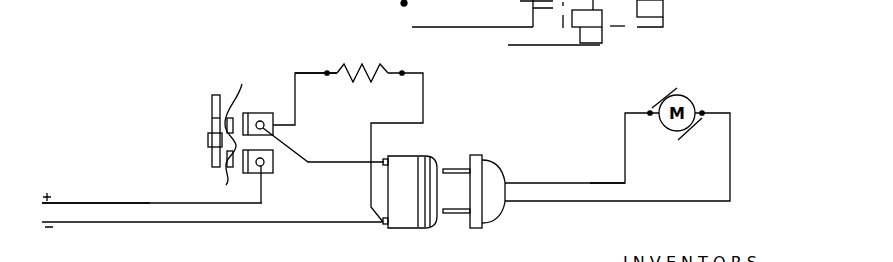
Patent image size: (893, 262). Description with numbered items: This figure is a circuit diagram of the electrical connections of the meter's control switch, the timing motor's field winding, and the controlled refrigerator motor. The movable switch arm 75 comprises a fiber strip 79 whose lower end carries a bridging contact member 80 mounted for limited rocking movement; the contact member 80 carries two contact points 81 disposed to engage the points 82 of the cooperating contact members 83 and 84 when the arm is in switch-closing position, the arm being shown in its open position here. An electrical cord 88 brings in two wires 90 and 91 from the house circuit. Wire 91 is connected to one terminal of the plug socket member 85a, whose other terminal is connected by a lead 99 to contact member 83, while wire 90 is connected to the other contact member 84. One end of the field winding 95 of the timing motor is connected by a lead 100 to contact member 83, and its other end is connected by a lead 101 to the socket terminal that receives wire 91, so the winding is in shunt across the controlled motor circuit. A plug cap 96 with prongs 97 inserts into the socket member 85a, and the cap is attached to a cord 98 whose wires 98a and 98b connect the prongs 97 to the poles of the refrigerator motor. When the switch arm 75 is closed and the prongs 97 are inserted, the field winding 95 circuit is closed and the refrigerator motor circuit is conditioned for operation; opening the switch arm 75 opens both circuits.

The movable switch arm 75 is at (205, 104).
The fiber strip 79 is at (208, 121).
The bridging contact member 80 is at (208, 141).
The contact points 81 is at (235, 116).
The contact points 82 is at (237, 118).
The contact member 83 is at (283, 93).
The contact member 84 is at (275, 171).
The electrical connecting device 85a is at (403, 221).
The electrical cord 88 is at (136, 214).
The wire 90 is at (162, 178).
The wire 91 is at (173, 222).
The field winding 95 is at (385, 66).
The plug cap 96 is at (488, 163).
The prongs 97 is at (459, 185).
The cord 98 is at (613, 195).
The wire 98a is at (562, 182).
The wire 98b is at (541, 203).
The lead 99 is at (352, 135).
The lead 100 is at (325, 72).
The lead 101 is at (425, 104).